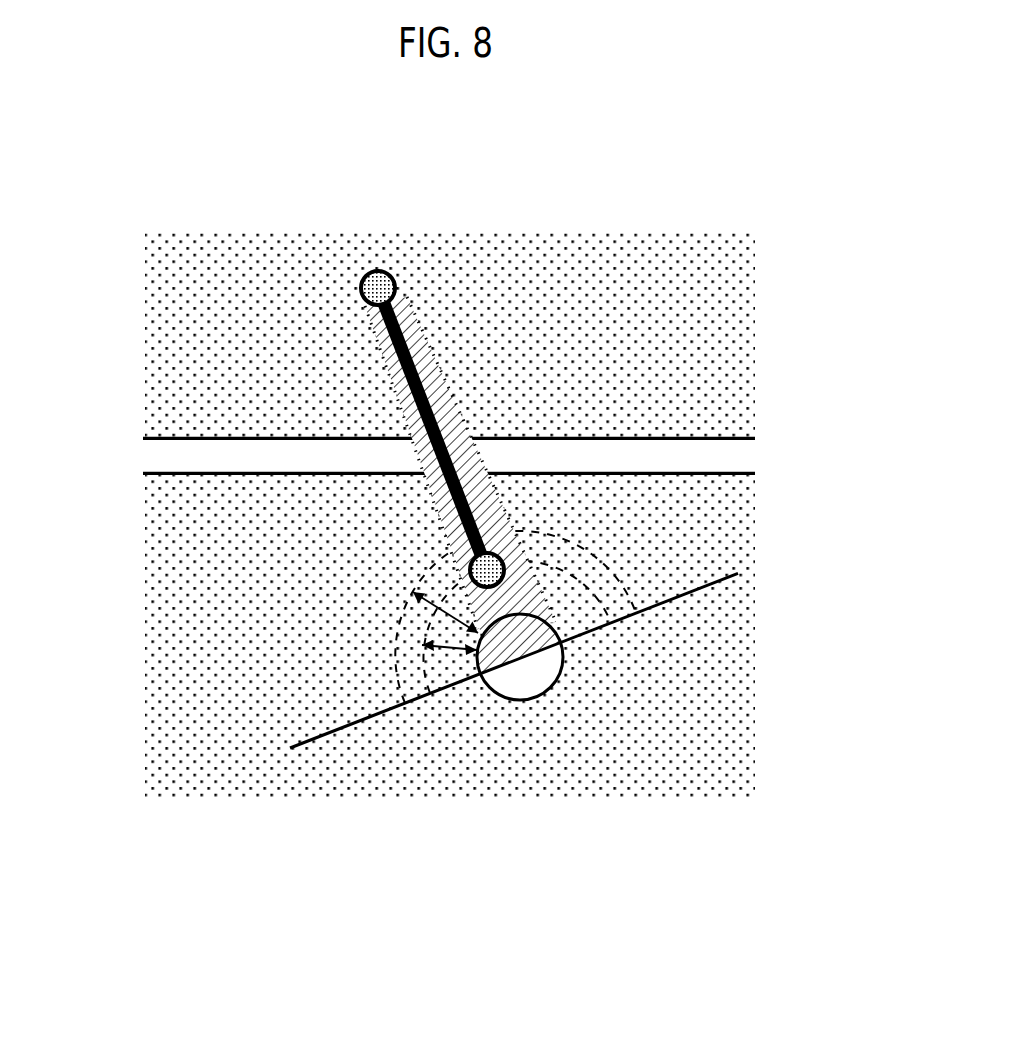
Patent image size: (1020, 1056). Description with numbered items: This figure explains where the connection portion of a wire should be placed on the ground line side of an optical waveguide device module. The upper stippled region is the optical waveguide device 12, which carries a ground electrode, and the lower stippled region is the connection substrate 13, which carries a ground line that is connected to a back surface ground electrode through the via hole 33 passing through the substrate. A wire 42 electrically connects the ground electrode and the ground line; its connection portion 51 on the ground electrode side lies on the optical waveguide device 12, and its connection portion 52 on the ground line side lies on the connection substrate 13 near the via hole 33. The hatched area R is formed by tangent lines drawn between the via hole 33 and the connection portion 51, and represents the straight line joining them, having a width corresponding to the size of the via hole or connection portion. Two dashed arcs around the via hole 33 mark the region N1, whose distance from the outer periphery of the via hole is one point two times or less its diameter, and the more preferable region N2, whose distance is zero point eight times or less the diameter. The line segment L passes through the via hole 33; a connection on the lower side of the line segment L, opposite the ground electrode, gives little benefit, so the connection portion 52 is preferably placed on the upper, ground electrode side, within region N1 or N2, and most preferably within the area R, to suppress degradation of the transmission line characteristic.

The optical waveguide device 12 is at (735, 352).
The connection substrate 13 is at (735, 522).
The via hole 33 is at (527, 688).
The wire 42 is at (430, 357).
The connection portion of the wire on the ground electrode side 51 is at (377, 280).
The connection portion of the wire on the ground line side 52 is at (495, 585).
The area R is at (432, 521).
The region N1 is at (400, 618).
The region N2 is at (423, 672).
The line segment L is at (337, 732).